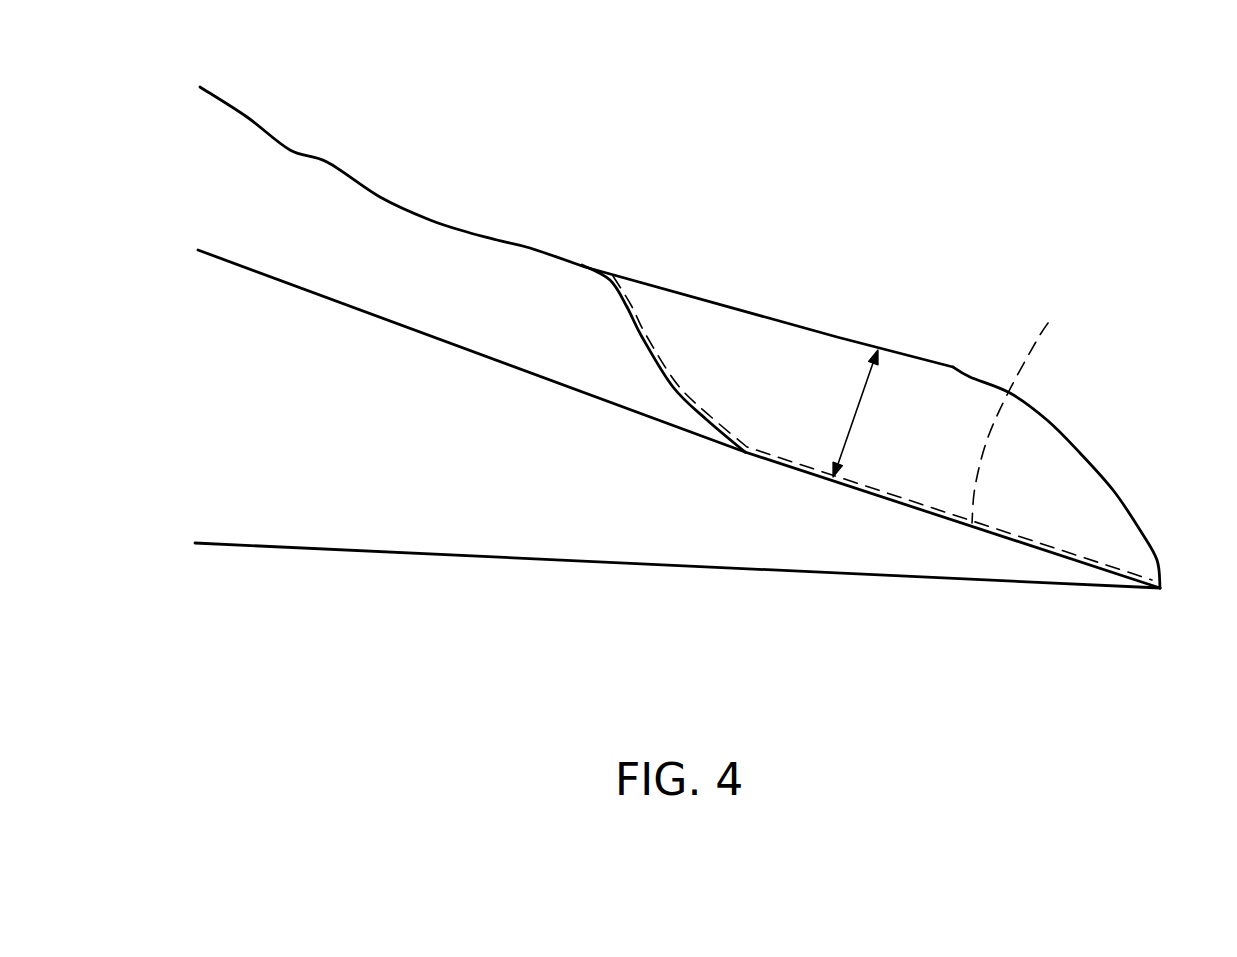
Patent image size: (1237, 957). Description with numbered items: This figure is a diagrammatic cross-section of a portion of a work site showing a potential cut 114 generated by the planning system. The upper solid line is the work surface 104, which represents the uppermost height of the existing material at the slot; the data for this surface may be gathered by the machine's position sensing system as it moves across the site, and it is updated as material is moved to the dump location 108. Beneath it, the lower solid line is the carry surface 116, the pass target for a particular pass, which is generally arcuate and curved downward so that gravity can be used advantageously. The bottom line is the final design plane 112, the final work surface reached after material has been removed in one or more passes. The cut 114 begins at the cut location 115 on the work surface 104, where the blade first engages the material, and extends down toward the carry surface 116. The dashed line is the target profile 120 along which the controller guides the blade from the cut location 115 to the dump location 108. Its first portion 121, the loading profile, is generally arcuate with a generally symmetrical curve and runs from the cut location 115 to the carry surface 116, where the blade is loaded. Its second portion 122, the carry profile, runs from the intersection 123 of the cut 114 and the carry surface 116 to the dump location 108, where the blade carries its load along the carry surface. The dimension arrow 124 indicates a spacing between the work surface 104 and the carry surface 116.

The work surface 104 is at (328, 158).
The dump location 108 is at (1123, 467).
The final design plane 112 is at (333, 547).
The cut 114 is at (655, 357).
The cut location 115 is at (582, 265).
The carry surface 116 is at (250, 268).
The target profile 120 is at (781, 362).
The first portion of the target profile 121 is at (647, 302).
The second portion of the target profile 122 is at (1021, 408).
The intersection 123 is at (733, 450).
The thickness dimension 124 is at (853, 410).